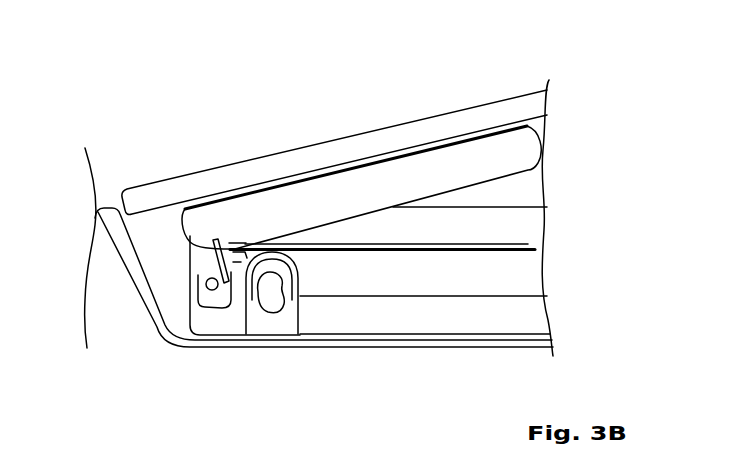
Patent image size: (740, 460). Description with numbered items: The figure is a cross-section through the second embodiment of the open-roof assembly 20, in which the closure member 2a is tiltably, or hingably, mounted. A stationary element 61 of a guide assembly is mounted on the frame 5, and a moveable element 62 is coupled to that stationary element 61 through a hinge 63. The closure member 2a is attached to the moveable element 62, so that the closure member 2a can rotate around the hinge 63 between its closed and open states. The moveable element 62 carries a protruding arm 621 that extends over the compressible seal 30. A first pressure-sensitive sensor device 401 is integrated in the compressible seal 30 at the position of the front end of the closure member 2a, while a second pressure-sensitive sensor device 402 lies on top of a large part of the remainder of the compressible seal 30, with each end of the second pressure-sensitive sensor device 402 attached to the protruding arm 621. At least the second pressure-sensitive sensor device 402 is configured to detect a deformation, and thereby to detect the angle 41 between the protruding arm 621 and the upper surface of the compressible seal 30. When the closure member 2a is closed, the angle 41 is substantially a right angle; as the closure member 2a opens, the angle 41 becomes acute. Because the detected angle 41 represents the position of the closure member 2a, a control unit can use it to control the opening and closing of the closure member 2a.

The open-roof assembly 20 is at (192, 69).
The closure member 2a is at (290, 167).
The moveable element 62 is at (424, 175).
The protruding arm 621 is at (214, 243).
The angle 41 is at (216, 264).
The hinge 63 is at (206, 282).
The stationary element 61 is at (223, 323).
The first pressure-sensitive sensor device 401 is at (267, 277).
The second pressure-sensitive sensor device 402 is at (520, 248).
The compressible seal 30 is at (377, 315).
The frame 5 is at (172, 342).